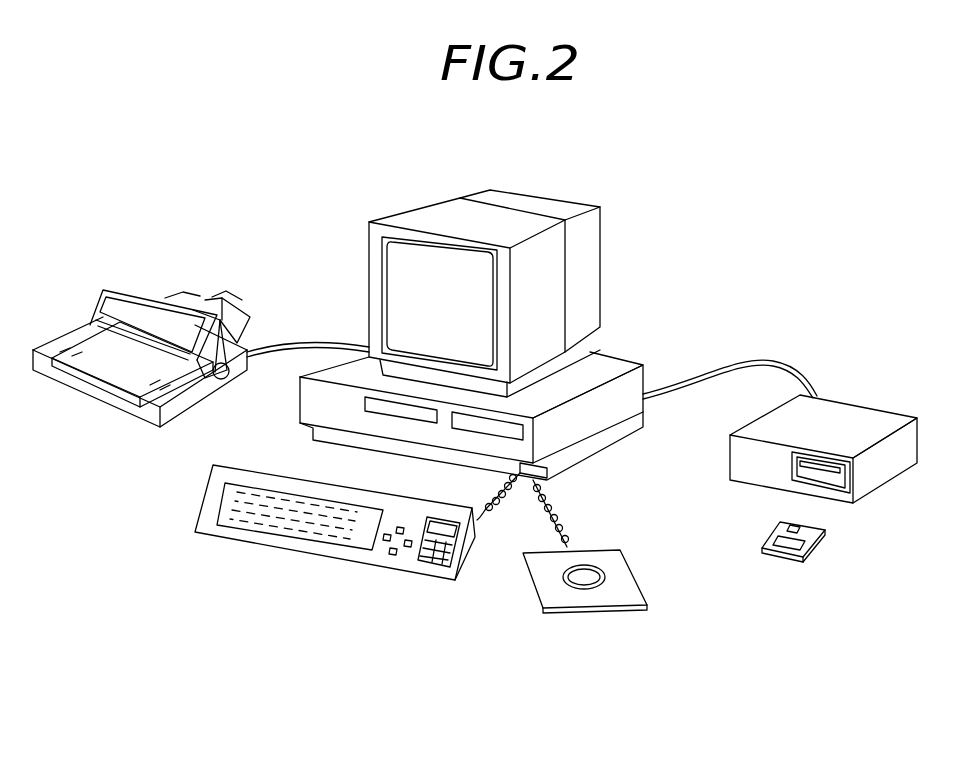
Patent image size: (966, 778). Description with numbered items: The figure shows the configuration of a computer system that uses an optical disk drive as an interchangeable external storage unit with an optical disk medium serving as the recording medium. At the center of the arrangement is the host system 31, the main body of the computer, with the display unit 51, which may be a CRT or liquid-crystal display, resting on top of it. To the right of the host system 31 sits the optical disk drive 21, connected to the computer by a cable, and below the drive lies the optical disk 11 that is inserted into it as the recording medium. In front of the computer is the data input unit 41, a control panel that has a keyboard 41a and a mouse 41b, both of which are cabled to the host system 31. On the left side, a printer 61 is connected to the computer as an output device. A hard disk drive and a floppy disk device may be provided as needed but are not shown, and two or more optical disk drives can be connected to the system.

The printer 61 is at (118, 290).
The display unit 51 is at (377, 253).
The host system 31 is at (631, 367).
The optical disk drive 21 is at (927, 487).
The optical disk 11 is at (828, 537).
The data input unit 41 is at (441, 591).
The keyboard 41a is at (203, 528).
The mouse 41b is at (615, 548).